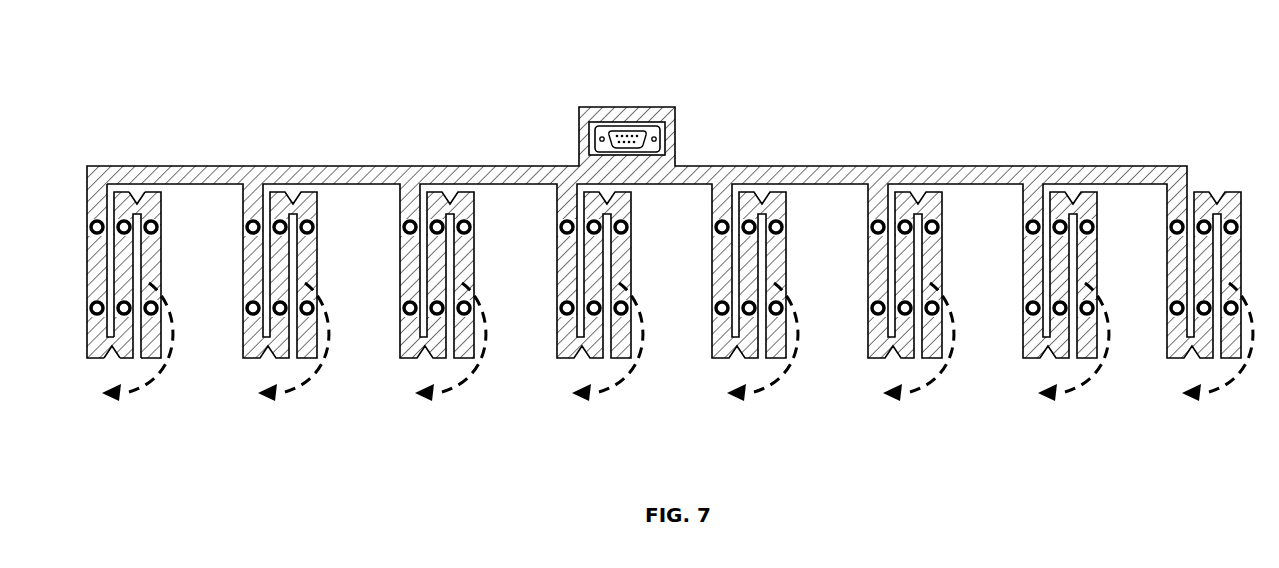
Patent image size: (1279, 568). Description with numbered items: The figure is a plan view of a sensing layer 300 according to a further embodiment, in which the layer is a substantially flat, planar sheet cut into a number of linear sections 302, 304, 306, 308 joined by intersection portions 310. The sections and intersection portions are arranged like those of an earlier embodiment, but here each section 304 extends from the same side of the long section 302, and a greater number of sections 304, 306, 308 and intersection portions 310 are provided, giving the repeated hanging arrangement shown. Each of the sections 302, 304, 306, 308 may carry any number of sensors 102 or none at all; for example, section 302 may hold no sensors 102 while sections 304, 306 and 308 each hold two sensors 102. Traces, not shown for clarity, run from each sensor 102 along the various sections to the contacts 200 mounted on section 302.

The sensor 102 is at (317, 227).
The contacts 200 is at (634, 123).
The sensing layer 300 is at (852, 76).
The section 302 is at (353, 166).
The section 304 is at (87, 273).
The section 306 is at (137, 345).
The section 308 is at (162, 273).
The intersection portion 310 is at (139, 190).